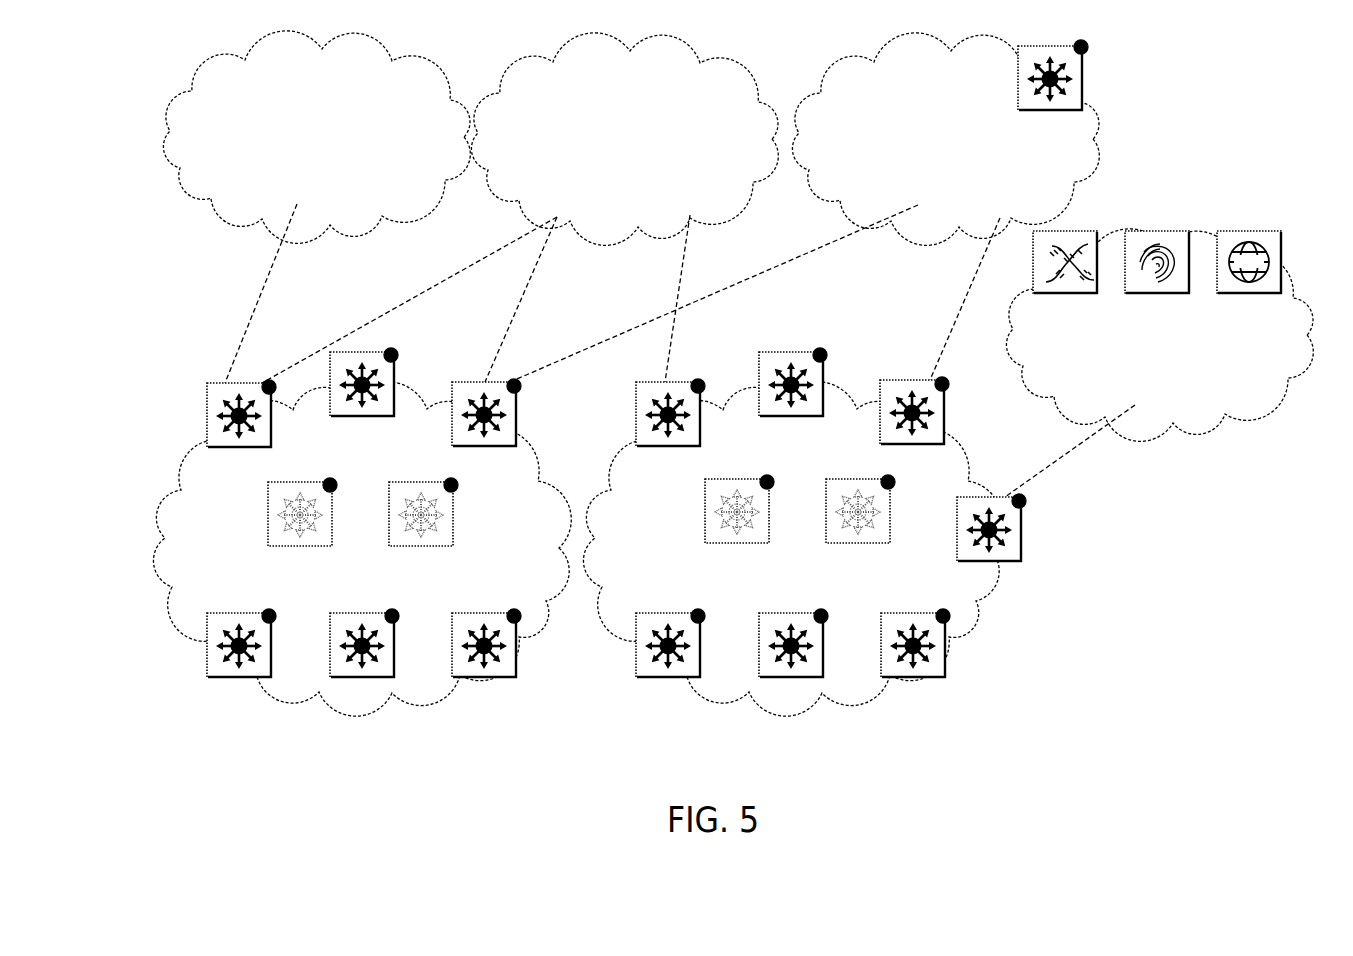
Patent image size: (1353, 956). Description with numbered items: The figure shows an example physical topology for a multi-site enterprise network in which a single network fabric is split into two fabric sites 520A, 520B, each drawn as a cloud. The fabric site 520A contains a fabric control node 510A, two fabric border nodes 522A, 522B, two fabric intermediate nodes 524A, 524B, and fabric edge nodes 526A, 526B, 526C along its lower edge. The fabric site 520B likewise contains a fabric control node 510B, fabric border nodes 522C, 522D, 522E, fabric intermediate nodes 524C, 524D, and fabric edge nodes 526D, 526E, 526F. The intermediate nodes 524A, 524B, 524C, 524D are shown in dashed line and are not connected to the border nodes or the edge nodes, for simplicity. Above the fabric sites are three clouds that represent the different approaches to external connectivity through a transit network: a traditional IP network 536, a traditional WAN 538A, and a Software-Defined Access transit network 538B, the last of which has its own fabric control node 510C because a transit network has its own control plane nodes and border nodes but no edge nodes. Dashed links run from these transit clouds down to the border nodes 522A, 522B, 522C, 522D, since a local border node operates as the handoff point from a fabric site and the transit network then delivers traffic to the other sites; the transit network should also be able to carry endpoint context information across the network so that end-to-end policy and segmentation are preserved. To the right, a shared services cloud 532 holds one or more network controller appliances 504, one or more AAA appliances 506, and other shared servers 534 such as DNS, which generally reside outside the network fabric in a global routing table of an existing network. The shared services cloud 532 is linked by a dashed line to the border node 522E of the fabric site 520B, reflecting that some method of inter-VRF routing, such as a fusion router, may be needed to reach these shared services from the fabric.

The traditional IP network 536 is at (302, 160).
The traditional WAN 538A is at (606, 160).
The Software-Defined Access transit network 538B is at (927, 160).
The fabric control node 510A is at (362, 417).
The fabric control node 510B is at (790, 417).
The fabric control node 510C is at (1082, 90).
The network controller appliance 504 is at (1066, 231).
The AAA appliance 506 is at (1158, 231).
The shared server 534 is at (1250, 231).
The shared services cloud 532 is at (1145, 370).
The fabric site 520A is at (440, 590).
The fabric site 520B is at (870, 590).
The fabric border node 522A is at (220, 448).
The fabric border node 522B is at (457, 447).
The fabric border node 522C is at (700, 447).
The fabric border node 522D is at (884, 445).
The fabric border node 522E is at (1020, 562).
The fabric intermediate node 524A is at (270, 546).
The fabric intermediate node 524B is at (452, 546).
The fabric intermediate node 524C is at (707, 543).
The fabric intermediate node 524D is at (889, 543).
The fabric edge node 526A is at (240, 677).
The fabric edge node 526B is at (352, 677).
The fabric edge node 526C is at (485, 677).
The fabric edge node 526D is at (668, 677).
The fabric edge node 526E is at (775, 677).
The fabric edge node 526F is at (913, 677).